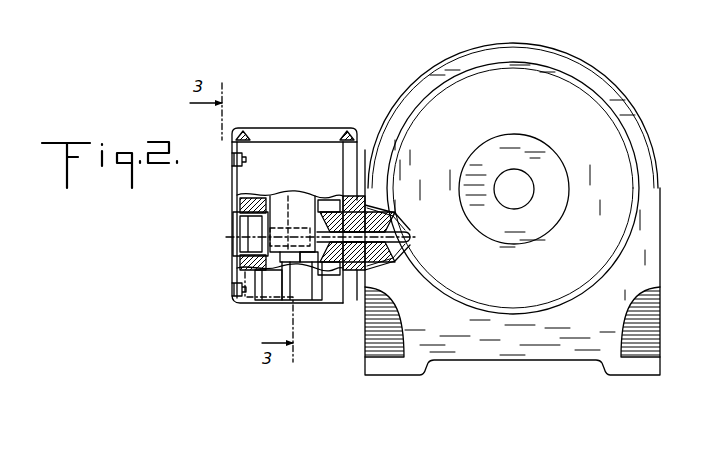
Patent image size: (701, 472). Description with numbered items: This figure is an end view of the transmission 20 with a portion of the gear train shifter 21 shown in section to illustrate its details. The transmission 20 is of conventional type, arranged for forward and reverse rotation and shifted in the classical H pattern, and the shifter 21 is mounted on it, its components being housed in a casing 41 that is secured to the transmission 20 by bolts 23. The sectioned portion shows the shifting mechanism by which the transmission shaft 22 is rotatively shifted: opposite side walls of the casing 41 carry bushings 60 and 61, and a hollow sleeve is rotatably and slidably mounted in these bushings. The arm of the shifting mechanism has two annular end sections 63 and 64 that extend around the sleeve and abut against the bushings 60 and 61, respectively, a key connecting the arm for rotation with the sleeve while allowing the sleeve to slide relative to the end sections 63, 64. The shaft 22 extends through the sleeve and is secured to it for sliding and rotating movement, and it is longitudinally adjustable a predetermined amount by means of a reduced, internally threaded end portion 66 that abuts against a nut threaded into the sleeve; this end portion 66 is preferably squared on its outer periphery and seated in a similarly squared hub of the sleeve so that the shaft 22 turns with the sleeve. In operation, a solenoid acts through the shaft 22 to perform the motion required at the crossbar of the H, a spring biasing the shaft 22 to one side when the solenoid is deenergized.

The transmission 20 is at (637, 100).
The gear train shifter 21 is at (277, 126).
The shaft 22 is at (405, 232).
The bolts 23 is at (236, 160).
The casing 41 is at (318, 146).
The bushing 60 is at (258, 235).
The bushing 61 is at (347, 300).
The annular end section 63 is at (270, 283).
The annular end section 64 is at (300, 272).
The reduced, internally threaded end portion 66 is at (292, 229).